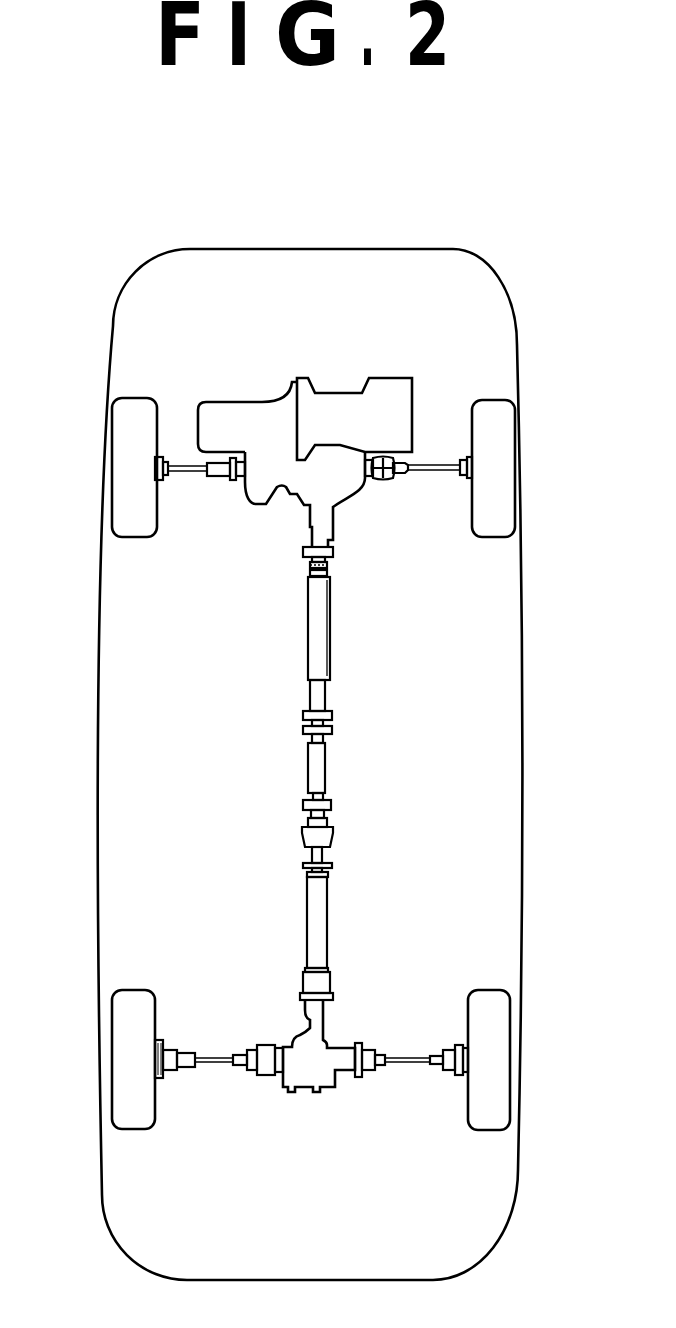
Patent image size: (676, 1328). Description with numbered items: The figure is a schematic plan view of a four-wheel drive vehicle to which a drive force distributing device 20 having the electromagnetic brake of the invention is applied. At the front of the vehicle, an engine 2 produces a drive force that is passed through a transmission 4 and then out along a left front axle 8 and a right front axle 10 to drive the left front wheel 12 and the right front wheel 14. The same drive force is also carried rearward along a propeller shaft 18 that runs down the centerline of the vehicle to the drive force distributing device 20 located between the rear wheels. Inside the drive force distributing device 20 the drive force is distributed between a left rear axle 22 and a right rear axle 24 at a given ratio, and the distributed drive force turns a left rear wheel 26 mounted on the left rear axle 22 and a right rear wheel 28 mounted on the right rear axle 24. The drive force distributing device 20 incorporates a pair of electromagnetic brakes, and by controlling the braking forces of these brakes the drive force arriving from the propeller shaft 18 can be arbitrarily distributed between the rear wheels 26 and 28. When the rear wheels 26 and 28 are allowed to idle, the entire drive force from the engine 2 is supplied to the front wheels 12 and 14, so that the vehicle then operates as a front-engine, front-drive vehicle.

The engine 2 is at (345, 393).
The transmission 4 is at (233, 402).
The left front axle 8 is at (180, 479).
The right front axle 10 is at (433, 473).
The left front wheel 12 is at (120, 468).
The right front wheel 14 is at (510, 468).
The propeller shaft 18 is at (318, 763).
The drive force distributing device 20 is at (347, 1026).
The left rear axle 22 is at (207, 1065).
The right rear axle 24 is at (403, 1067).
The left rear wheel 26 is at (115, 1063).
The right rear wheel 28 is at (508, 1066).